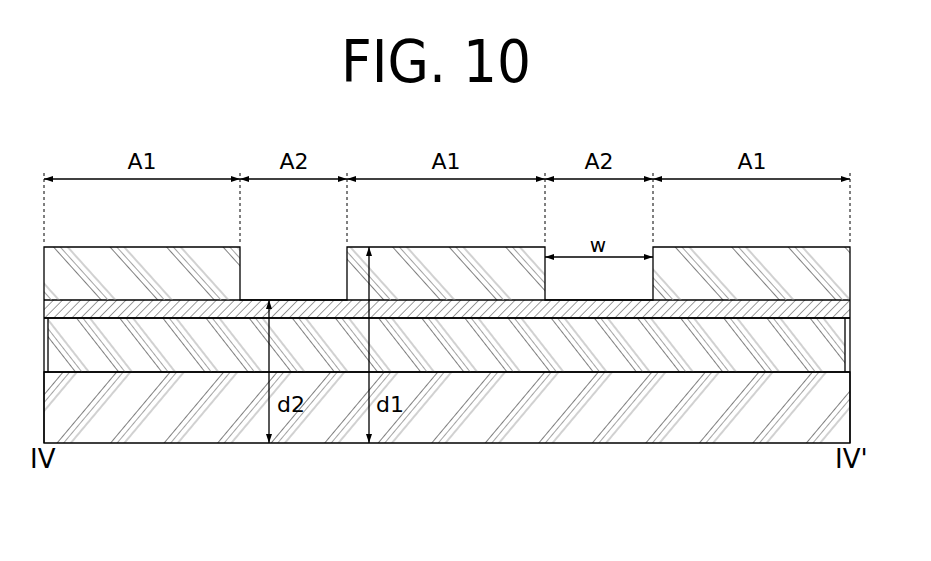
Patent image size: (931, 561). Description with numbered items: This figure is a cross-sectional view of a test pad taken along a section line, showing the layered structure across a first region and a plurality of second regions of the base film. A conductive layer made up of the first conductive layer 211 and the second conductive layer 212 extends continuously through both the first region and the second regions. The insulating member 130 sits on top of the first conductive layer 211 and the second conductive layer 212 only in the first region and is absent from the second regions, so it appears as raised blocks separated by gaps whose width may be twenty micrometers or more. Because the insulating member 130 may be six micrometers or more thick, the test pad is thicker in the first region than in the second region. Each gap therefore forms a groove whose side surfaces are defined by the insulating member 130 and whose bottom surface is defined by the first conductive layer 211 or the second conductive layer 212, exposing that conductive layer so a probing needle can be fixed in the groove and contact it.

The insulating member 130 is at (717, 267).
The first conductive layer 211 is at (466, 347).
The second conductive layer 212 is at (545, 302).